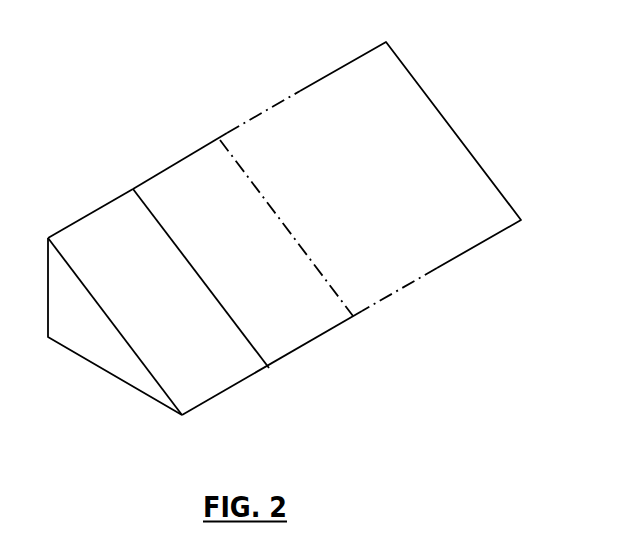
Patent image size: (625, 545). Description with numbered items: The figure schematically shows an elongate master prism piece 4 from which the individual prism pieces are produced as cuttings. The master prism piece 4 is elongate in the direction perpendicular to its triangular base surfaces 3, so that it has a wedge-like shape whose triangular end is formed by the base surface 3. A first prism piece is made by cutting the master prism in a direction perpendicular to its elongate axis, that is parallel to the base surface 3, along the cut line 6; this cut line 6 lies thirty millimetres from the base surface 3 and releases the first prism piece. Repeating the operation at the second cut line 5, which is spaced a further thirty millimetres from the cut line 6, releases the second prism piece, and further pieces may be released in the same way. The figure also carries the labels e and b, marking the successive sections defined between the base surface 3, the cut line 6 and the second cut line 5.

The triangular base surface 3 is at (92, 337).
The master prism piece 4 is at (426, 95).
The second cut line 5 is at (316, 276).
The cut line 6 is at (226, 318).
The second surface region b is at (195, 192).
The first surface region e is at (108, 240).